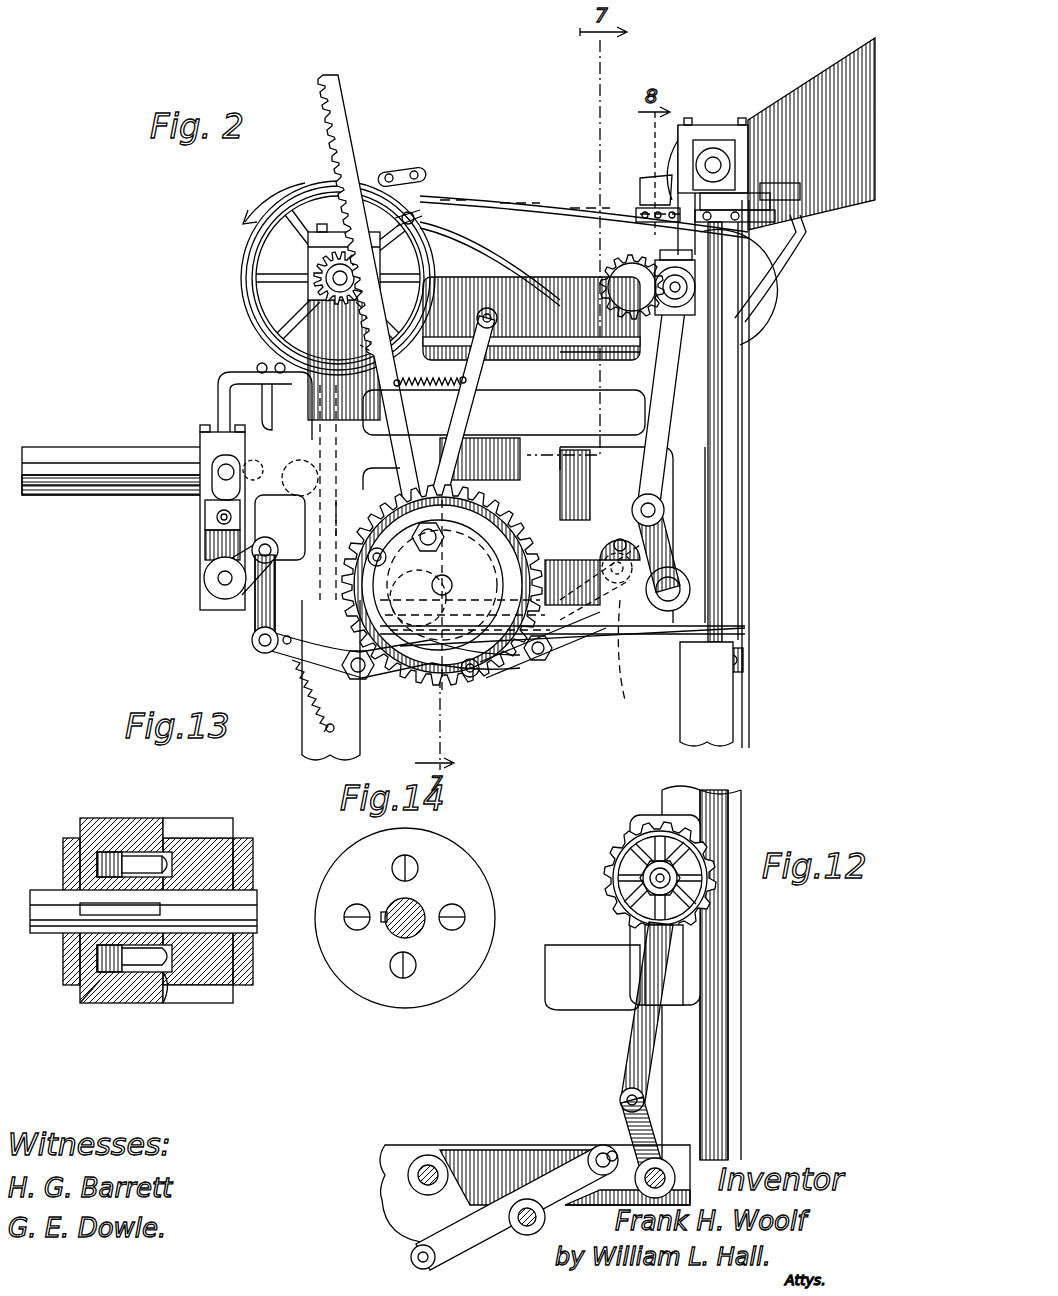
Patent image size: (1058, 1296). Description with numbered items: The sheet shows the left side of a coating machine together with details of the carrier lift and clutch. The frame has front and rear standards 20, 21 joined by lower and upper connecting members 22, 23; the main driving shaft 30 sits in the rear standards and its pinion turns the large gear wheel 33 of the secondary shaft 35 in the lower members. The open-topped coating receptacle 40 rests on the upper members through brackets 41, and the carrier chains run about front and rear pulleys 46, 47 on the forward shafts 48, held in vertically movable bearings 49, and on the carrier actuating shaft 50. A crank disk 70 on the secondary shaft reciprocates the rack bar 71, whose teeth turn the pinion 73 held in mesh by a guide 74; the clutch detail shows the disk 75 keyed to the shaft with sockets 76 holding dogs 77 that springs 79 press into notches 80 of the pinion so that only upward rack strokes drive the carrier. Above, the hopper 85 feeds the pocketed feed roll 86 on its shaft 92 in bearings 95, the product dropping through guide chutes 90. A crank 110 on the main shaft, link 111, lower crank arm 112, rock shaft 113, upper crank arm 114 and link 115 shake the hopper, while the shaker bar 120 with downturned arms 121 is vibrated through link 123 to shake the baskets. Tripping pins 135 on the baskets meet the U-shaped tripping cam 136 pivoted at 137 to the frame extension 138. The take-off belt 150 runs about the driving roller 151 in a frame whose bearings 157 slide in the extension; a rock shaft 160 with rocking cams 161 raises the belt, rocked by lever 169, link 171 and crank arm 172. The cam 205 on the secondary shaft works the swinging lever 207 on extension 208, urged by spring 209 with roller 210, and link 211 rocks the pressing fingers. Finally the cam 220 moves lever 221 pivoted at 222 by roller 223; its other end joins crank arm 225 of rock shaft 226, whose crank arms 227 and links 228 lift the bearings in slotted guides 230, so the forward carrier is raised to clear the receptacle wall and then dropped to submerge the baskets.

In FIG. 2, the front standard 20 is at (738, 694).
In FIG. 12, the front standard 20 is at (740, 916).
In FIG. 2, the rear standard 21 is at (302, 702).
In FIG. 2, the lower connecting member 22 is at (610, 566).
In FIG. 2, the upper connecting member 23 is at (562, 400).
In FIG. 2, the main driving shaft 30 is at (265, 648).
In FIG. 2, the large gear wheel 33 is at (525, 540).
In FIG. 2, the secondary shaft 35 is at (505, 520).
In FIG. 12, the secondary shaft 35 is at (430, 1170).
In FIG. 2, the coating receptacle 40 is at (531, 322).
In FIG. 2, the bracket 41 is at (531, 348).
In FIG. 2, the front pulley 46 is at (633, 268).
In FIG. 12, the front pulley 46 is at (628, 845).
In FIG. 2, the rear pulley 47 is at (283, 262).
In FIG. 2, the forward carrier shaft 48 is at (690, 290).
In FIG. 12, the forward carrier shaft 48 is at (685, 868).
In FIG. 2, the vertically movable bearing 49 is at (700, 302).
In FIG. 2, the carrier actuating shaft 50 is at (335, 280).
In FIG. 13, the carrier actuating shaft 50 is at (257, 910).
In FIG. 14, the carrier actuating shaft 50 is at (420, 905).
In FIG. 2, the crank disk 70 is at (515, 672).
In FIG. 2, the rack bar 71 is at (341, 172).
In FIG. 2, the pinion 73 is at (315, 275).
In FIG. 13, the pinion 73 is at (235, 836).
In FIG. 2, the guide 74 is at (362, 302).
In FIG. 13, the clutch disk 75 is at (130, 1003).
In FIG. 14, the clutch disk 75 is at (482, 897).
In FIG. 13, the socket 76 is at (100, 1003).
In FIG. 13, the dog 77 is at (140, 858).
In FIG. 14, the dog 77 is at (394, 866).
In FIG. 13, the spring 79 is at (116, 852).
In FIG. 13, the notch 80 is at (183, 985).
In FIG. 2, the hopper 85 is at (836, 62).
In FIG. 2, the feed roll 86 is at (675, 140).
In FIG. 2, the guide chute 90 is at (655, 180).
In FIG. 2, the feed roll shaft 92 is at (713, 158).
In FIG. 2, the bearing 95 is at (516, 208).
In FIG. 2, the crank 110 is at (375, 594).
In FIG. 2, the link 111 is at (588, 640).
In FIG. 2, the crank arm 112 is at (746, 632).
In FIG. 2, the rock shaft 113 is at (722, 565).
In FIG. 2, the crank arm 114 is at (766, 240).
In FIG. 2, the link 115 is at (795, 185).
In FIG. 2, the shaker bar 120 is at (408, 188).
In FIG. 2, the downturned arm 121 is at (430, 240).
In FIG. 2, the link 123 is at (522, 268).
In FIG. 2, the tripping pin 135 is at (372, 345).
In FIG. 2, the tripping cam 136 is at (268, 394).
In FIG. 2, the pivot connection 137 is at (270, 490).
In FIG. 2, the frame extension 138 is at (200, 545).
In FIG. 2, the take-off belt 150 is at (118, 447).
In FIG. 2, the driving roller 151 is at (320, 522).
In FIG. 2, the bearing 157 is at (208, 514).
In FIG. 2, the rock shaft 160 is at (222, 580).
In FIG. 2, the rocking cam 161 is at (258, 612).
In FIG. 2, the lever 169 is at (388, 690).
In FIG. 2, the link 171 is at (262, 632).
In FIG. 2, the crank arm 172 is at (256, 550).
In FIG. 2, the cam 205 is at (528, 500).
In FIG. 2, the swinging lever 207 is at (468, 405).
In FIG. 2, the frame extension 208 is at (398, 445).
In FIG. 2, the contractile spring 209 is at (432, 386).
In FIG. 2, the roller 210 is at (368, 557).
In FIG. 2, the link 211 is at (572, 350).
In FIG. 12, the cam 220 is at (395, 1222).
In FIG. 2, the lever 221 is at (540, 654).
In FIG. 12, the lever 221 is at (540, 1170).
In FIG. 2, the pivot 222 is at (566, 600).
In FIG. 12, the pivot 222 is at (522, 1230).
In FIG. 2, the roller 223 is at (470, 684).
In FIG. 12, the roller 223 is at (412, 1258).
In FIG. 2, the crank arm 225 is at (626, 682).
In FIG. 12, the crank arm 225 is at (608, 1150).
In FIG. 2, the rock shaft 226 is at (641, 660).
In FIG. 12, the rock shaft 226 is at (665, 1172).
In FIG. 2, the crank arm 227 is at (672, 537).
In FIG. 12, the crank arm 227 is at (670, 1100).
In FIG. 2, the link 228 is at (660, 478).
In FIG. 12, the link 228 is at (650, 1052).
In FIG. 2, the slotted guide 230 is at (690, 362).
In FIG. 12, the slotted guide 230 is at (672, 970).